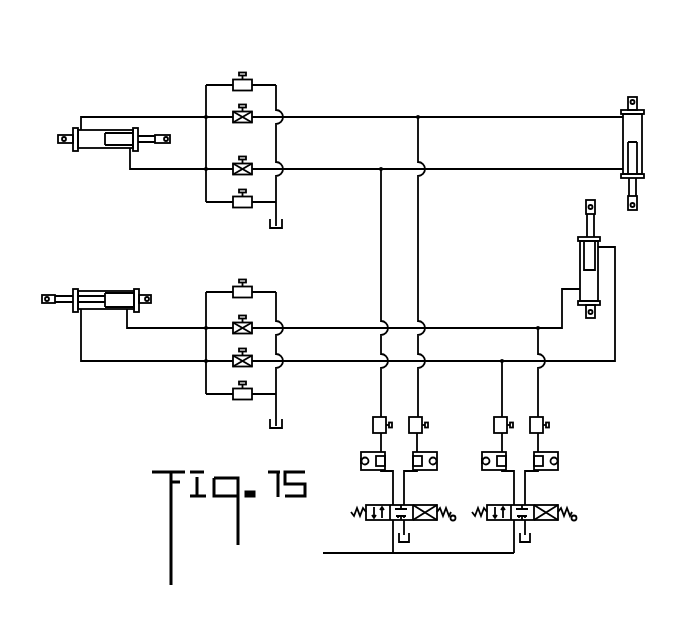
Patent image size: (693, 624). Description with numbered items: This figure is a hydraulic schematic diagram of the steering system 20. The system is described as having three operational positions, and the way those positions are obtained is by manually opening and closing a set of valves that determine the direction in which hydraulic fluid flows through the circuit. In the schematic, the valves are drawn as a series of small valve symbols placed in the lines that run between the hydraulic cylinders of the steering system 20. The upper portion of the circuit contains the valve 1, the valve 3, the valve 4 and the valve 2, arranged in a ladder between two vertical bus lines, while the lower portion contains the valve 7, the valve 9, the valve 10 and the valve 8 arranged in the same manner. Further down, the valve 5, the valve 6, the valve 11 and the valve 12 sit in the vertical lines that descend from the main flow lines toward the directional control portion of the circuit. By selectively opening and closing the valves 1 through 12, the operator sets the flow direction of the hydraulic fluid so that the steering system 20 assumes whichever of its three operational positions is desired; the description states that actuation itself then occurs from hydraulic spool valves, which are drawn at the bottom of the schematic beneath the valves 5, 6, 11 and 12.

The valve 1 is at (236, 79).
The valve 2 is at (236, 196).
The valve 3 is at (236, 111).
The valve 4 is at (236, 163).
The valve 5 is at (384, 416).
The valve 6 is at (419, 416).
The valve 7 is at (236, 286).
The valve 8 is at (236, 388).
The valve 9 is at (236, 322).
The valve 10 is at (231, 354).
The valve 11 is at (508, 416).
The valve 12 is at (545, 416).
The steering system 20 is at (565, 93).